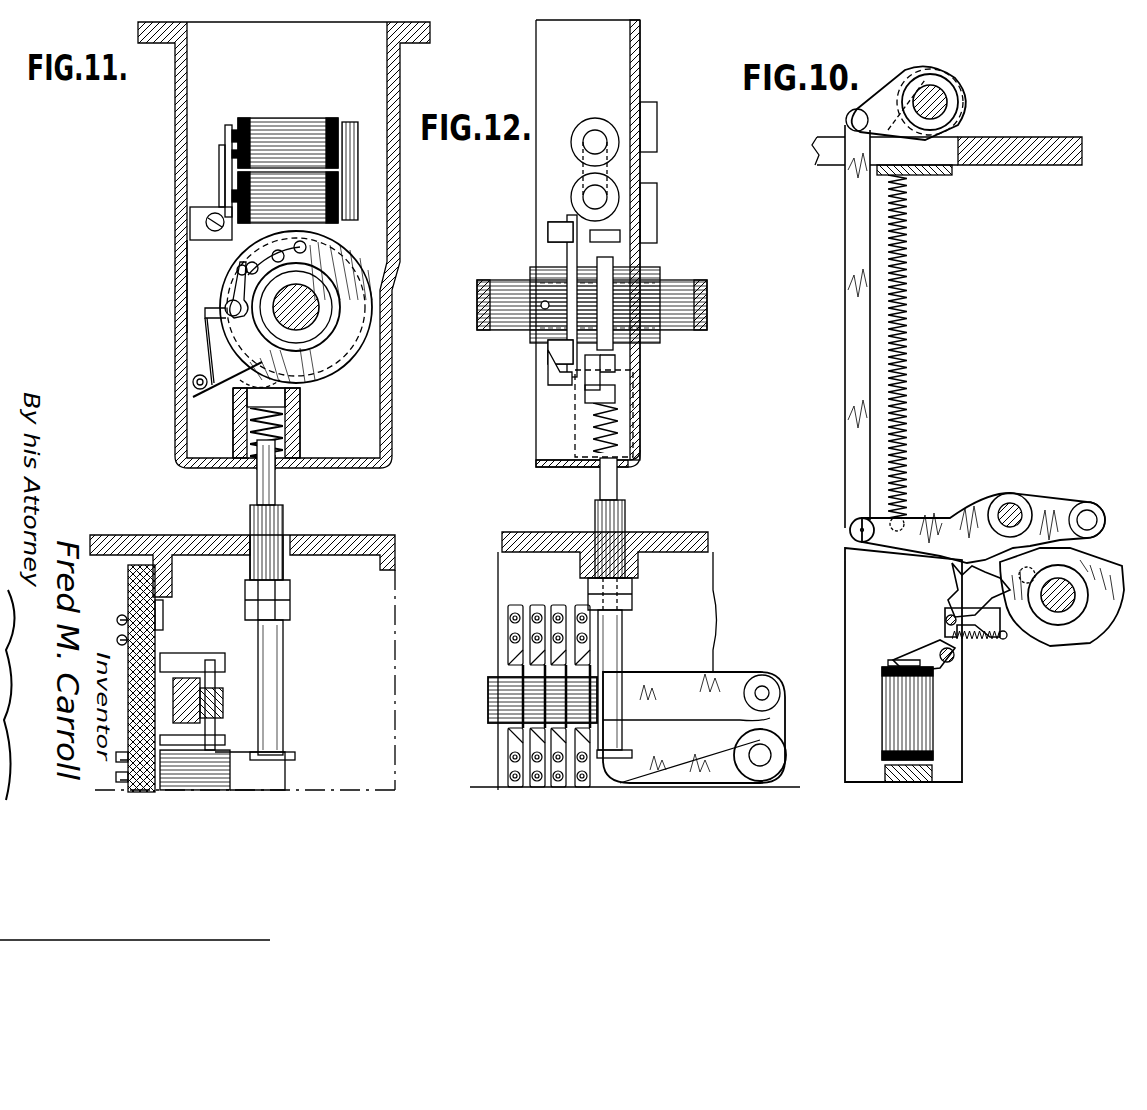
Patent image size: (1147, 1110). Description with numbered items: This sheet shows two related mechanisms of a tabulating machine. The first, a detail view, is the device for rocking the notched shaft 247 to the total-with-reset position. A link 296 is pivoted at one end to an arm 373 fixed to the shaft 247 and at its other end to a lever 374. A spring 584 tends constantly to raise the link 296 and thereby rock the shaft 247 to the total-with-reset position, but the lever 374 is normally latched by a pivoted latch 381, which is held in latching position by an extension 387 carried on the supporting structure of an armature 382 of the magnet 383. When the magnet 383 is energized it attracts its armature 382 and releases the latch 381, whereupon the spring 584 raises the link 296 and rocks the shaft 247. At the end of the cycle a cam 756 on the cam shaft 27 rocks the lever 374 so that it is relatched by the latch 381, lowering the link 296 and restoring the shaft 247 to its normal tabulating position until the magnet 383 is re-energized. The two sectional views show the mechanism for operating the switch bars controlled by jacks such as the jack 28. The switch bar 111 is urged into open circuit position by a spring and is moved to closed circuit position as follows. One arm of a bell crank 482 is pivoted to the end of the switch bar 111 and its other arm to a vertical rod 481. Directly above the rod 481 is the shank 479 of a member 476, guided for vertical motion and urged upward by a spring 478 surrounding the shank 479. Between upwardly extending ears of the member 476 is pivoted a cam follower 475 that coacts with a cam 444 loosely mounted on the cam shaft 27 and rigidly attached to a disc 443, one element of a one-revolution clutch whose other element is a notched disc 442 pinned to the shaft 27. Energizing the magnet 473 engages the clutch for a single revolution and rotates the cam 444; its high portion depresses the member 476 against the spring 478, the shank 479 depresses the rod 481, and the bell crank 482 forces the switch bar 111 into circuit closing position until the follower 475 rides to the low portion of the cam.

In FIG. 11, the cam shaft 27 is at (300, 310).
In FIG. 12, the cam shaft 27 is at (680, 290).
In FIG. 10, the cam shaft 27 is at (1058, 605).
In FIG. 11, the jack 28 is at (375, 184).
In FIG. 11, the switch bar 111 is at (183, 690).
In FIG. 12, the switch bar 111 is at (730, 677).
In FIG. 10, the notched shaft 247 is at (935, 106).
In FIG. 10, the link 296 is at (845, 270).
In FIG. 10, the arm 373 is at (878, 90).
In FIG. 10, the lever 374 is at (933, 525).
In FIG. 10, the pivoted latch 381 is at (958, 590).
In FIG. 10, the armature 382 is at (895, 662).
In FIG. 10, the magnet 383 is at (918, 707).
In FIG. 10, the extension 387 is at (942, 623).
In FIG. 11, the notched disc 442 is at (335, 317).
In FIG. 11, the disc 443 is at (350, 273).
In FIG. 12, the disc 443 is at (628, 222).
In FIG. 11, the cam 444 is at (300, 238).
In FIG. 12, the cam 444 is at (610, 262).
In FIG. 11, the magnet 473 is at (288, 135).
In FIG. 11, the cam follower 475 is at (245, 378).
In FIG. 12, the cam follower 475 is at (603, 377).
In FIG. 11, the member 476 is at (288, 398).
In FIG. 12, the member 476 is at (622, 392).
In FIG. 11, the spring 478 is at (280, 440).
In FIG. 12, the spring 478 is at (615, 440).
In FIG. 11, the shank 479 is at (276, 485).
In FIG. 12, the shank 479 is at (620, 487).
In FIG. 11, the vertical rod 481 is at (283, 672).
In FIG. 12, the vertical rod 481 is at (625, 642).
In FIG. 12, the bell crank 482 is at (778, 744).
In FIG. 10, the spring 584 is at (905, 415).
In FIG. 10, the cam 756 is at (1098, 612).